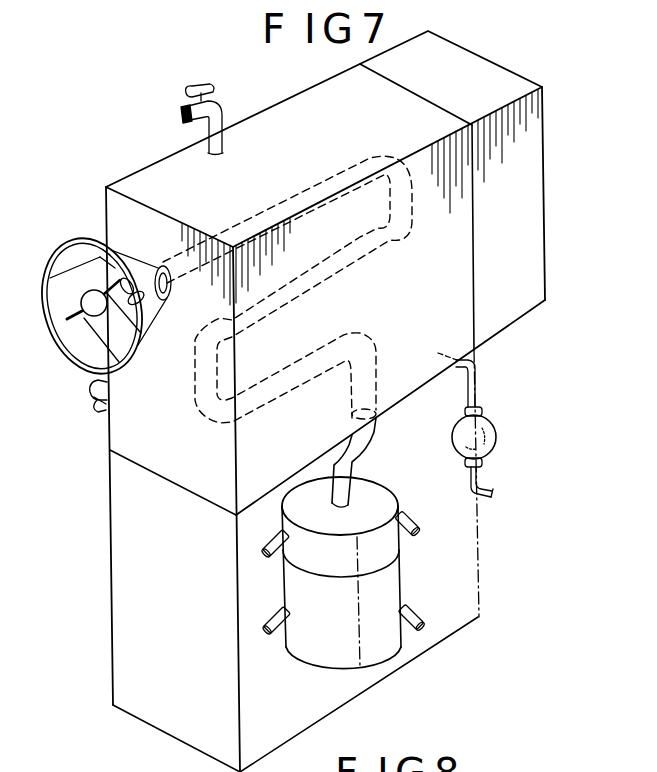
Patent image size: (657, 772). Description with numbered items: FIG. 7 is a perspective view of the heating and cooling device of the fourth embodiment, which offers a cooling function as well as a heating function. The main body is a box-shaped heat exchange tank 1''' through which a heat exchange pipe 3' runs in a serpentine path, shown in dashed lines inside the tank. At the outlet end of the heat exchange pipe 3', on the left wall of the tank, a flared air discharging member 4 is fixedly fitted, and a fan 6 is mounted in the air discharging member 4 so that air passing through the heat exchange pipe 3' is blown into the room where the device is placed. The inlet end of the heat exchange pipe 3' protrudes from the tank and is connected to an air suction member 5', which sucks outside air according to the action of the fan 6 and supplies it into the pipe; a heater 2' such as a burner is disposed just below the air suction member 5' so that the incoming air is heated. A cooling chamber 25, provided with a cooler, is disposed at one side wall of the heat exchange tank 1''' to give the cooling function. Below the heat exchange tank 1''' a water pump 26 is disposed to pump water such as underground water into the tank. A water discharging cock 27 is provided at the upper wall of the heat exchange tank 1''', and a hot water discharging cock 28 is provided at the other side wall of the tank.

In FIG. 7, the heat exchange tank 1''' is at (325, 401).
In FIG. 8, the heat exchange tank 1''' is at (523, 760).
In FIG. 7, the cooling chamber 25 is at (532, 200).
In FIG. 8, the cooling chamber 25 is at (583, 760).
In FIG. 7, the water discharging cock 27 is at (218, 98).
In FIG. 7, the heat exchange pipe 3' is at (392, 289).
In FIG. 7, the air discharging member 4 is at (68, 260).
In FIG. 7, the fan 6 is at (72, 358).
In FIG. 7, the hot water discharging cock 28 is at (88, 404).
In FIG. 7, the water pump 26 is at (496, 435).
In FIG. 7, the air suction member 5' is at (426, 497).
In FIG. 7, the heater 2' is at (398, 587).